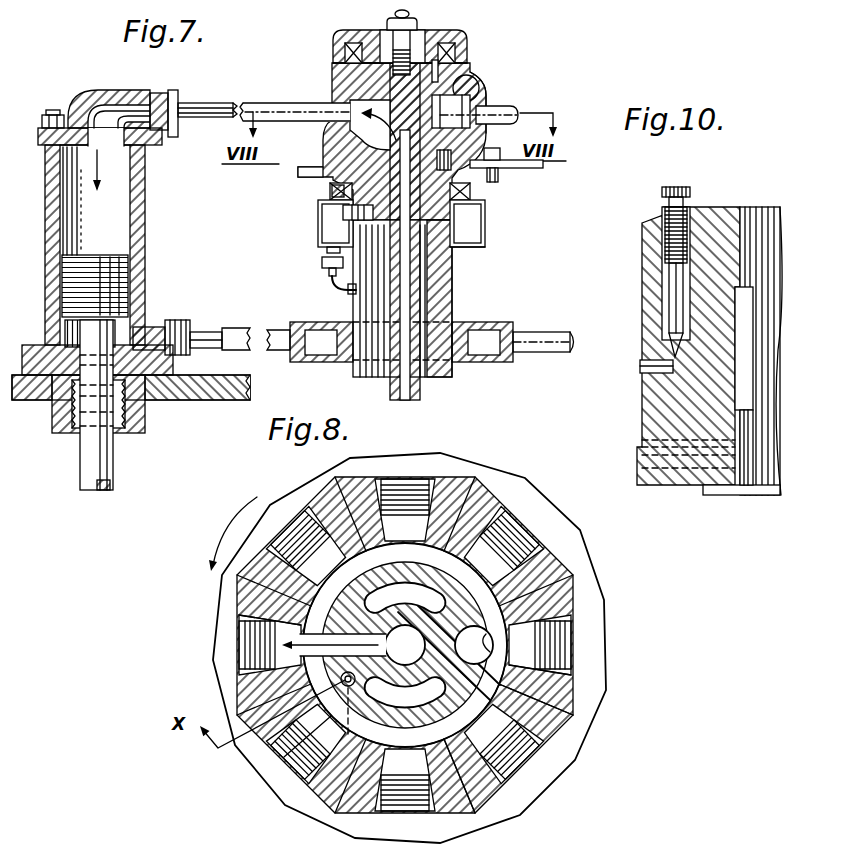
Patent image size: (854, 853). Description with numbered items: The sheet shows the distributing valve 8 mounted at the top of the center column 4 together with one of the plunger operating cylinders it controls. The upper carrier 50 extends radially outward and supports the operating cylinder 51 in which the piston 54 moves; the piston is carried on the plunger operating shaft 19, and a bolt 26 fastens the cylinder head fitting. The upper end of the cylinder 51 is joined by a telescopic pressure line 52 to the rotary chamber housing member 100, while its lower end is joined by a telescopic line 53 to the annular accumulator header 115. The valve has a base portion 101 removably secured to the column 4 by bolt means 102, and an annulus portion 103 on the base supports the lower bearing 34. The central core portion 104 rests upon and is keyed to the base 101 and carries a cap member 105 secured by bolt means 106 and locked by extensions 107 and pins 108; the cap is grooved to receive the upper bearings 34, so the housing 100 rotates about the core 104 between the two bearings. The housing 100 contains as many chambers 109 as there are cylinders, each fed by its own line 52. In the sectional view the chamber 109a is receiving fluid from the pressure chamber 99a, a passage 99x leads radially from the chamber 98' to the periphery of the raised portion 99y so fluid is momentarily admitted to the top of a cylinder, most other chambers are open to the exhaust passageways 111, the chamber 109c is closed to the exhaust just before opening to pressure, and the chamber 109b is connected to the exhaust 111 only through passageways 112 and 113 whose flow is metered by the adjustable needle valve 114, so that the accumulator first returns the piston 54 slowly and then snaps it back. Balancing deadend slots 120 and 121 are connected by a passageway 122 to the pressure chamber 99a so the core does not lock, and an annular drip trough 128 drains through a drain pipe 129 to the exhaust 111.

In FIG. 7, the center column 4 is at (352, 305).
In FIG. 7, the distributing valve 8 is at (465, 67).
In FIG. 7, the plunger operating shaft 19 is at (100, 471).
In FIG. 7, the bolt 26 is at (56, 114).
In FIG. 7, the bearing 34 is at (353, 51).
In FIG. 7, the upper carrier 50 is at (244, 384).
In FIG. 7, the operating cylinder 51 is at (137, 220).
In FIG. 7, the telescopic pressure line 52 is at (221, 109).
In FIG. 7, the telescopic line 53 is at (250, 311).
In FIG. 7, the piston 54 is at (128, 277).
In FIG. 7, the chamber 98' is at (442, 231).
In FIG. 8, the chamber 98' is at (405, 631).
In FIG. 7, the pressure chamber 99a is at (363, 124).
In FIG. 10, the pressure chamber 99a is at (746, 392).
In FIG. 8, the pressure chamber 99a is at (351, 574).
In FIG. 8, the passage 99x is at (492, 698).
In FIG. 8, the raised portion 99y is at (514, 734).
In FIG. 7, the chamber housing member 100 is at (336, 86).
In FIG. 8, the chamber housing member 100 is at (450, 485).
In FIG. 7, the base portion 101 is at (320, 206).
In FIG. 7, the bolt means 102 is at (343, 213).
In FIG. 7, the annulus portion 103 is at (331, 190).
In FIG. 7, the central core portion 104 is at (470, 98).
In FIG. 10, the central core portion 104 is at (660, 421).
In FIG. 8, the central core portion 104 is at (550, 548).
In FIG. 7, the cap member 105 is at (342, 42).
In FIG. 7, the bolt means 106 is at (417, 21).
In FIG. 7, the extension 107 is at (393, 26).
In FIG. 7, the pin 108 is at (452, 60).
In FIG. 8, the chamber 109 is at (540, 668).
In FIG. 8, the chamber 109a is at (232, 636).
In FIG. 8, the chamber 109b is at (262, 733).
In FIG. 8, the chamber 109c is at (297, 573).
In FIG. 7, the exhaust passageway 111 is at (441, 172).
In FIG. 8, the exhaust passageway 111 is at (492, 642).
In FIG. 10, the passageway 112 is at (656, 373).
In FIG. 8, the passageway 112 is at (341, 717).
In FIG. 8, the passageway 113 is at (403, 745).
In FIG. 10, the adjustable needle valve 114 is at (675, 293).
In FIG. 7, the annular accumulator header 115 is at (331, 363).
In FIG. 7, the balancing deadend slot 120 is at (481, 73).
In FIG. 7, the balancing deadend slot 121 is at (489, 178).
In FIG. 7, the passageway 122 is at (373, 120).
In FIG. 7, the drip trough 128 is at (483, 247).
In FIG. 7, the drain pipe 129 is at (322, 269).